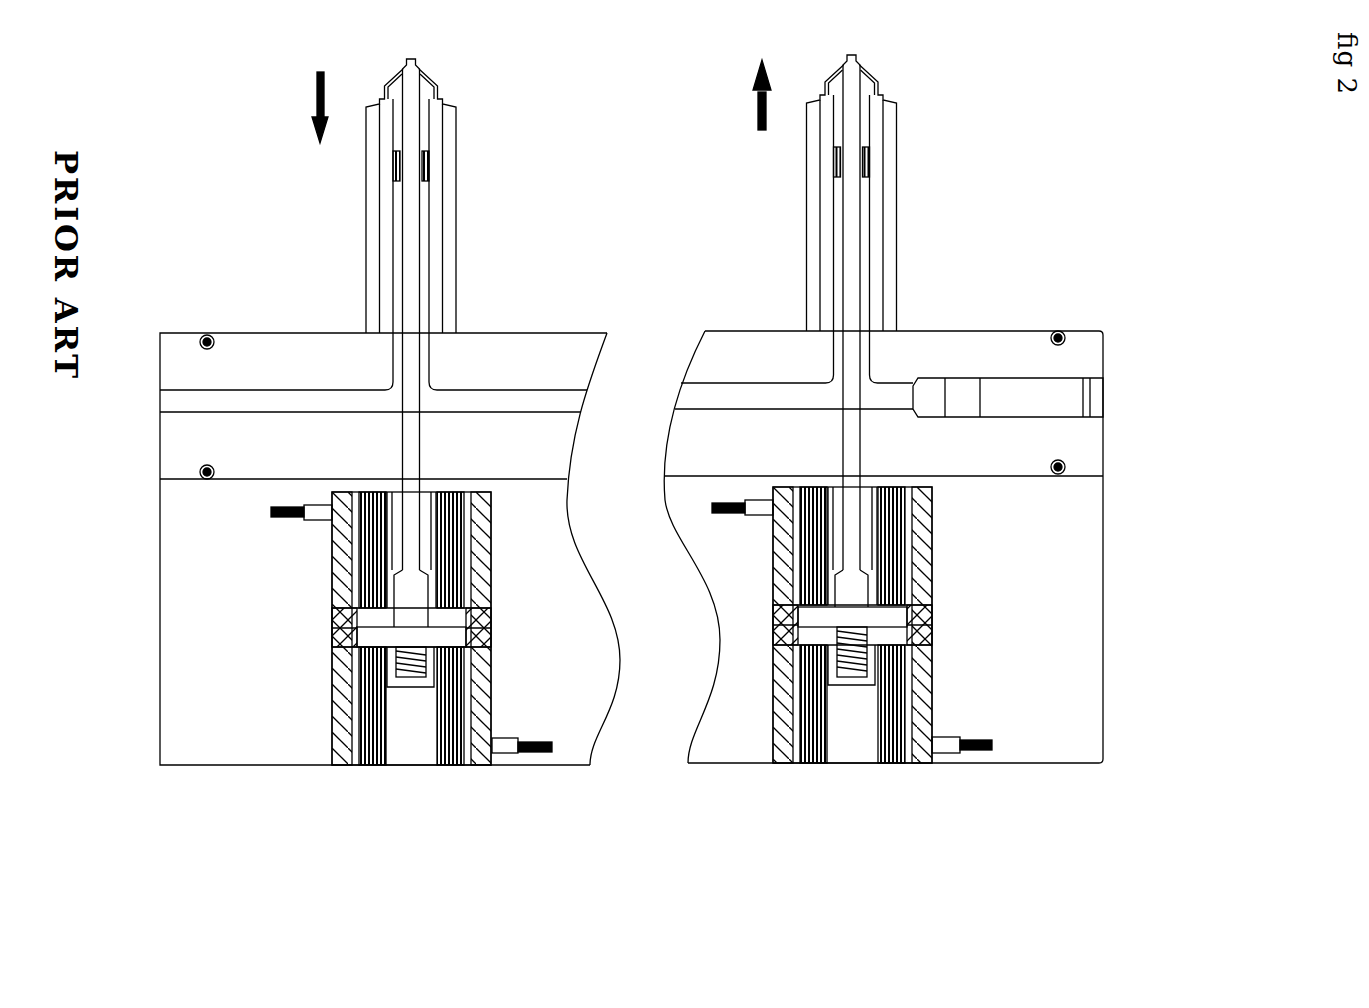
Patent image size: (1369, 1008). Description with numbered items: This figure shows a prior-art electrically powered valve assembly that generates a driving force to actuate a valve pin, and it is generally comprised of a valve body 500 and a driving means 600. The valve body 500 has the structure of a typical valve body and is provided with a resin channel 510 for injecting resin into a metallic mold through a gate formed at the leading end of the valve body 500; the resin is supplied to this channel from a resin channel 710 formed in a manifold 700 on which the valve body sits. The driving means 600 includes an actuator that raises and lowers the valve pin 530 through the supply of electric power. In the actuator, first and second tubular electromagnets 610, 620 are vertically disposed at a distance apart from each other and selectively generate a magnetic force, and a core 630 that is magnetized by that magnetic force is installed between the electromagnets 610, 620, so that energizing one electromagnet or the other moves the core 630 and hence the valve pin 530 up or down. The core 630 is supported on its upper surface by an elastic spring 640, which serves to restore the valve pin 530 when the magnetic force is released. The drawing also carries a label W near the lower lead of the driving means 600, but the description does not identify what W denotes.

The valve body 500 is at (1102, 136).
The resin channel 510 is at (837, 248).
The valve pin 530 is at (850, 188).
The driving means 600 is at (970, 674).
The first tubular electromagnet 610 is at (1162, 730).
The second tubular electromagnet 620 is at (1162, 573).
The core 630 is at (377, 634).
The elastic spring 640 is at (792, 744).
The manifold 700 is at (1205, 462).
The resin channel 710 is at (1205, 418).
The lead wire W is at (1117, 862).